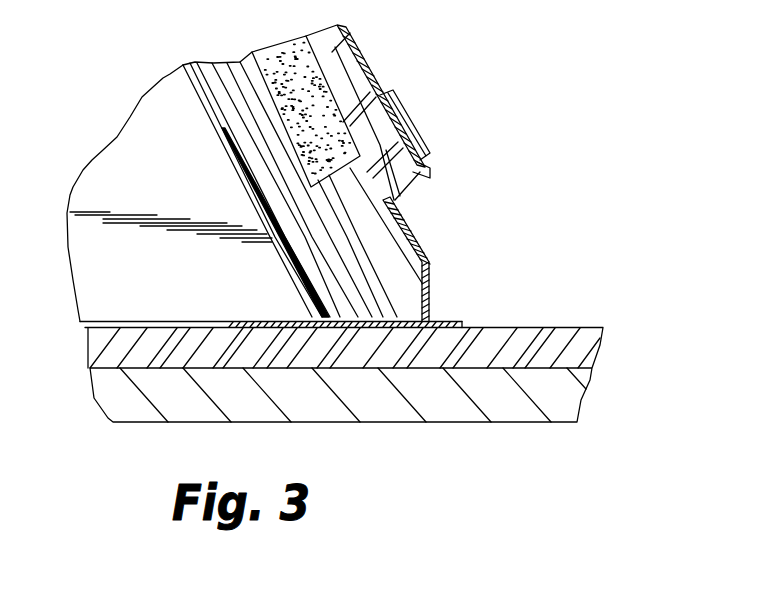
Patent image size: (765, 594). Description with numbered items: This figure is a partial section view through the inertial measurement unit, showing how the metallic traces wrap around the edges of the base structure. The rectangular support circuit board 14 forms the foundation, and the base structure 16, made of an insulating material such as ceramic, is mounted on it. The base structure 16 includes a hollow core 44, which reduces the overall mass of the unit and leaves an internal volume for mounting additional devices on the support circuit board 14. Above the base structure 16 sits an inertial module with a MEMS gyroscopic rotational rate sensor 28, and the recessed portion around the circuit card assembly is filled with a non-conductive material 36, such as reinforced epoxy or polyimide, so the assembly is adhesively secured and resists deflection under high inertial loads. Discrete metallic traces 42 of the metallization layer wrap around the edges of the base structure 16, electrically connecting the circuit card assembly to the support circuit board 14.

The support circuit board 14 is at (569, 329).
The base structure 16 is at (385, 250).
The MEMS gyroscopic rotational rate sensor 28 is at (373, 63).
The non-conductive material 36 is at (280, 85).
The metallic traces 42 is at (430, 283).
The hollow core 44 is at (110, 193).